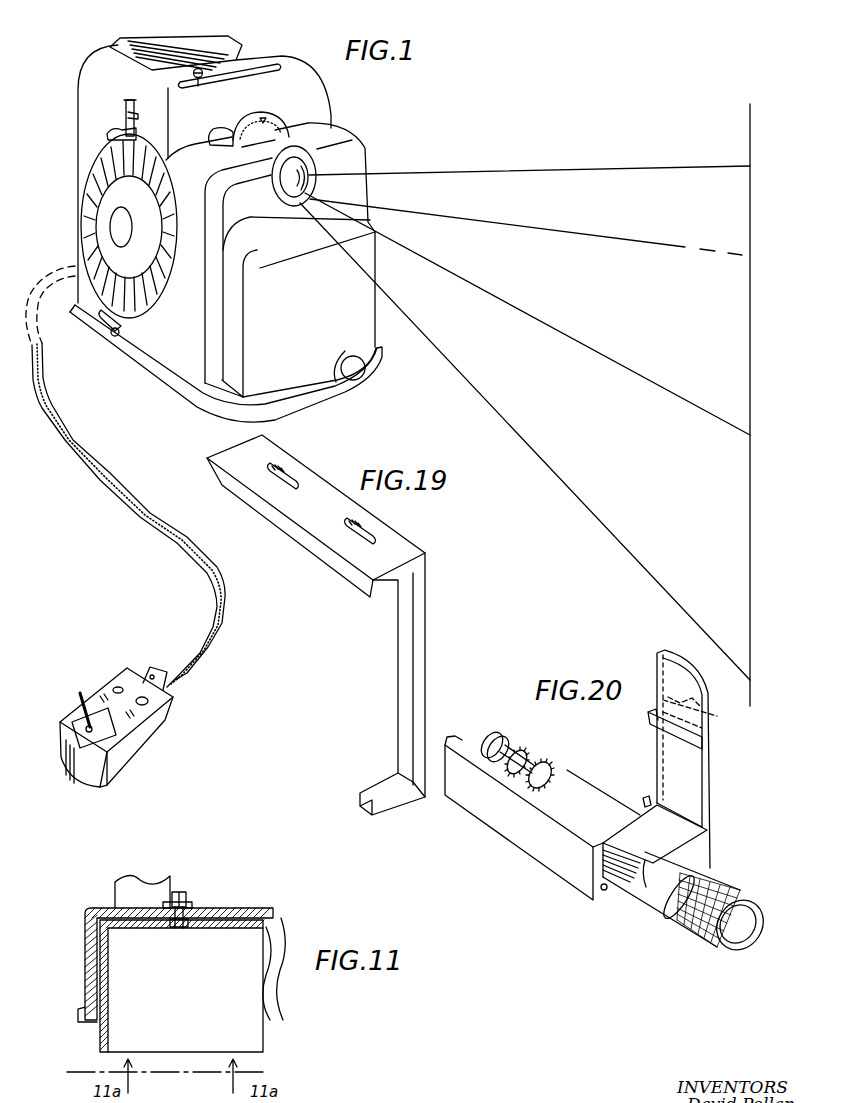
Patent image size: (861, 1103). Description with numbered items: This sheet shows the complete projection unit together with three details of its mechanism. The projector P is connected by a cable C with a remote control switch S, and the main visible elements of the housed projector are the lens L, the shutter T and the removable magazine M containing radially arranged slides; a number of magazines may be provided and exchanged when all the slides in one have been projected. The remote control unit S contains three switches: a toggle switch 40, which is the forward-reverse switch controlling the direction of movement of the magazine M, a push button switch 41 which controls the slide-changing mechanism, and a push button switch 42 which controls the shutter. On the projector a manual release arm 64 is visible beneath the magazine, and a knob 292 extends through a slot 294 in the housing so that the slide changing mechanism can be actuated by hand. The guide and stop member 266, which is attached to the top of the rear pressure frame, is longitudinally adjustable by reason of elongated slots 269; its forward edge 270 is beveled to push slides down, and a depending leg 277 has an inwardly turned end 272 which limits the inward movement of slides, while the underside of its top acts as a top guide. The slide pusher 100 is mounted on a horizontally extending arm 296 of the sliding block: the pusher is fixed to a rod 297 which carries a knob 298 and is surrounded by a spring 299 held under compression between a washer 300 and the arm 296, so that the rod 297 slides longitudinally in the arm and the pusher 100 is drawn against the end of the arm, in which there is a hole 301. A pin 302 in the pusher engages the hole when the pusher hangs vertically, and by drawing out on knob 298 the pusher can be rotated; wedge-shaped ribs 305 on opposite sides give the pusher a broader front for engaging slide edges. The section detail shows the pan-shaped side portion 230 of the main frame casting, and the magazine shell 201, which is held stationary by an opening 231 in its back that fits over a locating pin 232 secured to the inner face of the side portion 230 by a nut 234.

In FIG. 1, the projector P is at (70, 89).
In FIG. 1, the magazine M is at (81, 200).
In FIG. 1, the shutter T is at (250, 125).
In FIG. 1, the lens L is at (283, 184).
In FIG. 1, the cable C is at (72, 458).
In FIG. 1, the remote control switch S is at (60, 746).
In FIG. 1, the pusher 100 is at (125, 122).
In FIG. 20, the pusher 100 is at (697, 782).
In FIG. 1, the knob 298 is at (108, 131).
In FIG. 20, the knob 298 is at (733, 893).
In FIG. 1, the knob 292 is at (198, 83).
In FIG. 1, the slot 294 is at (258, 70).
In FIG. 1, the manual release arm 64 is at (124, 322).
In FIG. 1, the toggle switch 40 is at (79, 700).
In FIG. 1, the push button switch 41 is at (118, 688).
In FIG. 1, the push button switch 42 is at (149, 701).
In FIG. 19, the forward edge 270 is at (208, 471).
In FIG. 19, the elongated slots 269 is at (350, 522).
In FIG. 19, the guide and stop member 266 is at (317, 625).
In FIG. 19, the vertical leg 277 is at (425, 648).
In FIG. 19, the inwardly turned end 272 is at (380, 787).
In FIG. 20, the arm 296 is at (520, 827).
In FIG. 20, the rod 297 is at (548, 768).
In FIG. 20, the spring 299 is at (528, 750).
In FIG. 20, the washer 300 is at (502, 738).
In FIG. 20, the hole 301 is at (603, 891).
In FIG. 20, the pin 302 is at (646, 798).
In FIG. 20, the wedge-shaped ribs 305 is at (648, 713).
In FIG. 11, the side portion 230 is at (85, 967).
In FIG. 11, the shell 201 is at (100, 1042).
In FIG. 11, the locating pin 232 is at (177, 927).
In FIG. 11, the opening 231 is at (190, 923).
In FIG. 11, the nut 234 is at (192, 902).